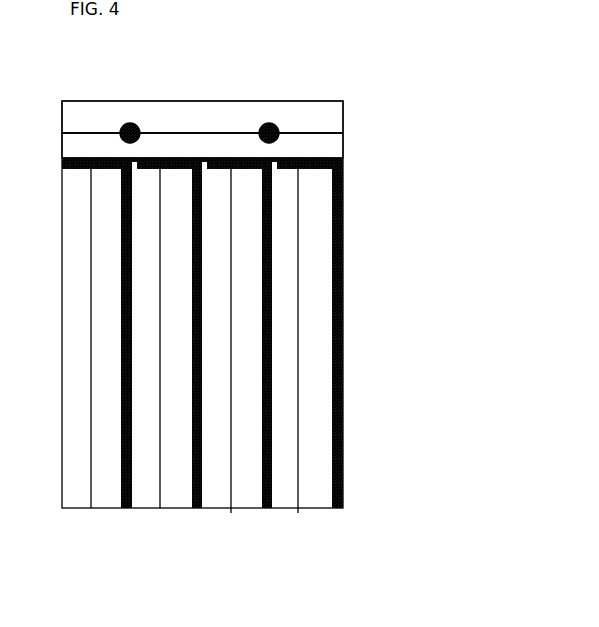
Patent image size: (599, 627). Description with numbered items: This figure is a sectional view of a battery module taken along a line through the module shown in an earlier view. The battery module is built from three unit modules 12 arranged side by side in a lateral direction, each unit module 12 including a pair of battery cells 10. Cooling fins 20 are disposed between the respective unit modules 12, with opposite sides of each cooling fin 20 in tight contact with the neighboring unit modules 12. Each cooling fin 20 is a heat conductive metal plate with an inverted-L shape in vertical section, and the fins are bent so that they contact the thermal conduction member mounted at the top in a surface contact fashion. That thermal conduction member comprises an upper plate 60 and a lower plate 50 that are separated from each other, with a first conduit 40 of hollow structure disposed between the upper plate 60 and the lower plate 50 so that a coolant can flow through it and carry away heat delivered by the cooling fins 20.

The battery cell 10 is at (322, 487).
The unit module 12 is at (190, 512).
The cooling fin 20 is at (350, 272).
The first conduit 40 is at (282, 118).
The lower plate 50 is at (330, 142).
The upper plate 60 is at (330, 112).